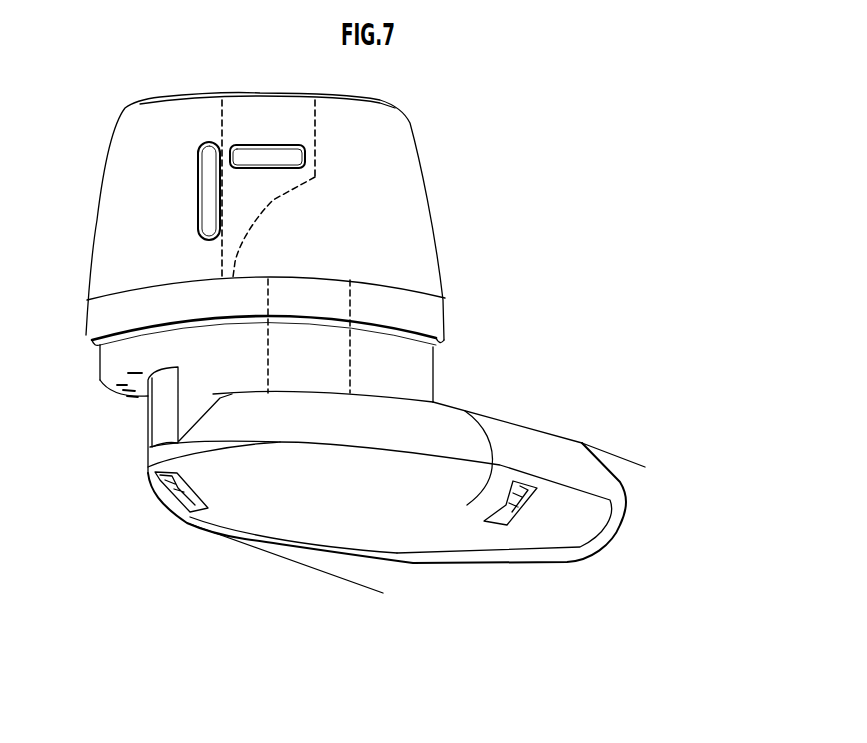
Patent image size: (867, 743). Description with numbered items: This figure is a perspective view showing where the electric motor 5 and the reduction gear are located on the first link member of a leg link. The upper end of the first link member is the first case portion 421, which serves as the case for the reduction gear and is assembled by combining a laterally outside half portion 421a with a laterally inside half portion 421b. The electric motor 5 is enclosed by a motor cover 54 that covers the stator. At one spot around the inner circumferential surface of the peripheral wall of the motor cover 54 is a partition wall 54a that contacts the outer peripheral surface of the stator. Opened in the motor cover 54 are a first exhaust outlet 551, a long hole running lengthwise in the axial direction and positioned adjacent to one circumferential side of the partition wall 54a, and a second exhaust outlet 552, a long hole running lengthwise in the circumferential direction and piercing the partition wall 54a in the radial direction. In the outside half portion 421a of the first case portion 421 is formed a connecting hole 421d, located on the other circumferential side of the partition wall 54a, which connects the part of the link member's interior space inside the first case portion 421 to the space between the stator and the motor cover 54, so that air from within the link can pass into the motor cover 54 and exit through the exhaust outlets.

The electric motor 5 is at (440, 157).
The motor cover 54 is at (428, 238).
The partition wall 54a is at (266, 207).
The first exhaust outlet 551 is at (203, 168).
The second exhaust outlet 552 is at (298, 150).
The first case portion 421 is at (226, 508).
The laterally outside half portion 421a is at (447, 411).
The laterally inside half portion 421b is at (318, 532).
The connecting hole 421d is at (350, 328).